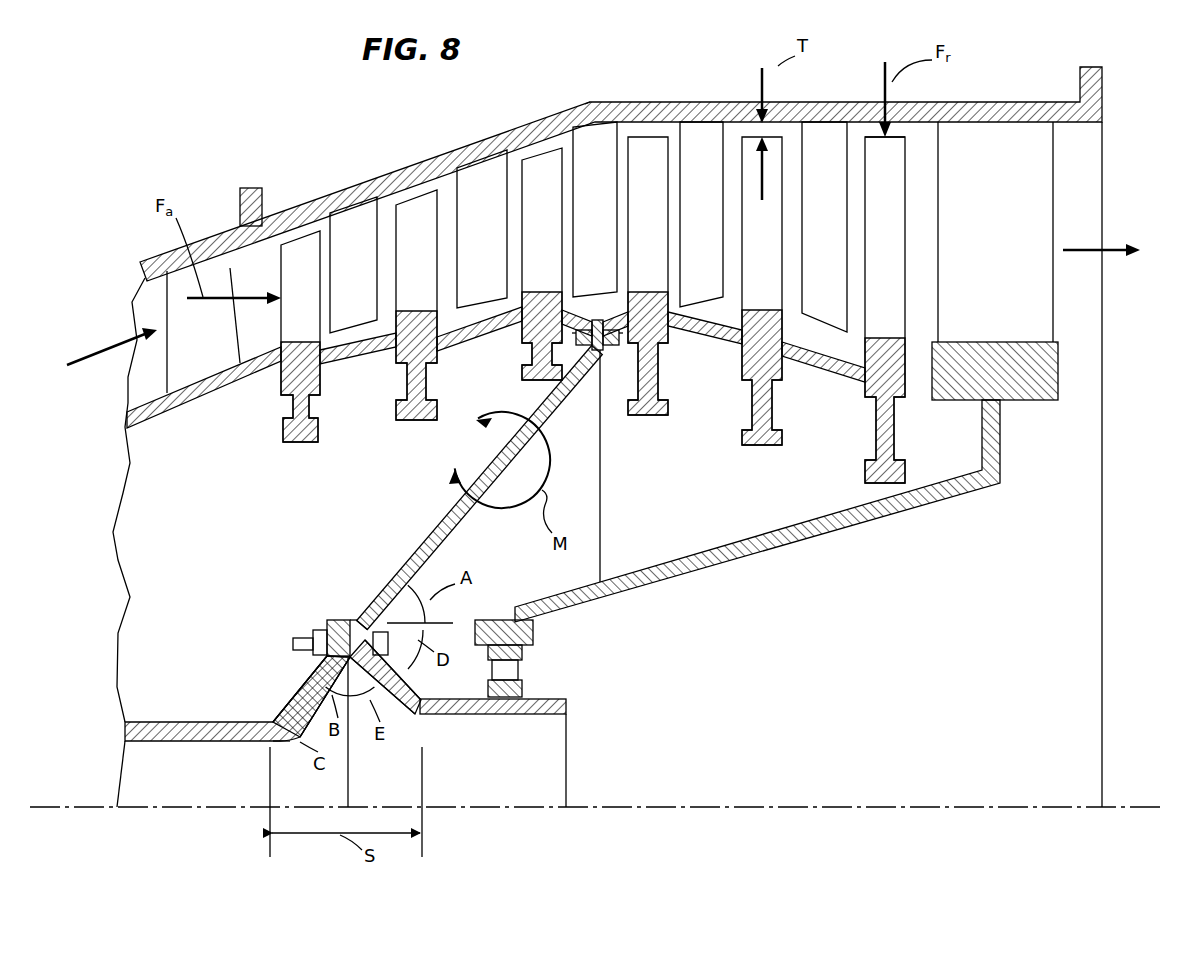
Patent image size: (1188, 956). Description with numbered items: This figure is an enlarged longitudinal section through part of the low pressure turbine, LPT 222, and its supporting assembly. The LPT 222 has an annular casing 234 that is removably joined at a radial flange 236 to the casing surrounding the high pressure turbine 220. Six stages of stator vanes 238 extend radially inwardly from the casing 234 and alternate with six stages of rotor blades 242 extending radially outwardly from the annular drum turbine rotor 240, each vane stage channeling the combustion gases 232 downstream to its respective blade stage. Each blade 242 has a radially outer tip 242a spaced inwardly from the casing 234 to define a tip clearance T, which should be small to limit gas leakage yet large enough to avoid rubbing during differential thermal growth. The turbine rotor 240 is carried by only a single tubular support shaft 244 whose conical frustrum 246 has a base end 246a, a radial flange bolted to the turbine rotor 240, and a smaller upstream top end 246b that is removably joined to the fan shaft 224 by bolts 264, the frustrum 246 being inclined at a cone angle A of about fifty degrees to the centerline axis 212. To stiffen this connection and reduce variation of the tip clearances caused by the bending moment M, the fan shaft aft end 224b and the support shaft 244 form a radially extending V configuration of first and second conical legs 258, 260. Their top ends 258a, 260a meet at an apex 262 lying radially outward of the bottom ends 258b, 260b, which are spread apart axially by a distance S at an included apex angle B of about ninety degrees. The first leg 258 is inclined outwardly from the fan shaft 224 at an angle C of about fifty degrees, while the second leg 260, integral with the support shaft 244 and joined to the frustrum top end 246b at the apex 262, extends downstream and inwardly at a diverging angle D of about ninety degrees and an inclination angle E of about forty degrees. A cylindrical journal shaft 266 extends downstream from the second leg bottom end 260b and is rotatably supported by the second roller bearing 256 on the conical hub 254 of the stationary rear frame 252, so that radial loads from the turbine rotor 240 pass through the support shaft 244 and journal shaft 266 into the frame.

The centerline axis 212 is at (1012, 800).
The high pressure turbine 220 is at (143, 262).
The low pressure turbine 222 is at (660, 78).
The fan shaft 224 is at (182, 716).
The fan shaft aft end 224b is at (270, 745).
The combustion gases 232 is at (92, 364).
The annular casing 234 is at (550, 112).
The radial flange 236 is at (265, 196).
The stator vanes 238 is at (229, 262).
The turbine rotor 240 is at (724, 350).
The rotor blades 242 is at (640, 136).
The radially outer tip 242a is at (790, 101).
The support shaft 244 is at (352, 610).
The conical portion or frustrum 246 is at (428, 540).
The frustrum base end 246a is at (605, 360).
The frustrum top end 246b is at (361, 608).
The rear frame 252 is at (1060, 356).
The conical hub 254 is at (925, 505).
The second roller bearing 256 is at (522, 672).
The first conical leg 258 is at (290, 685).
The first leg top end 258a is at (298, 675).
The first leg bottom end 258b is at (283, 716).
The second conical leg 260 is at (384, 698).
The second leg top end 260a is at (362, 702).
The second leg bottom end 260b is at (425, 736).
The apex 262 is at (335, 620).
The bolts 264 is at (313, 640).
The journal shaft 266 is at (548, 700).